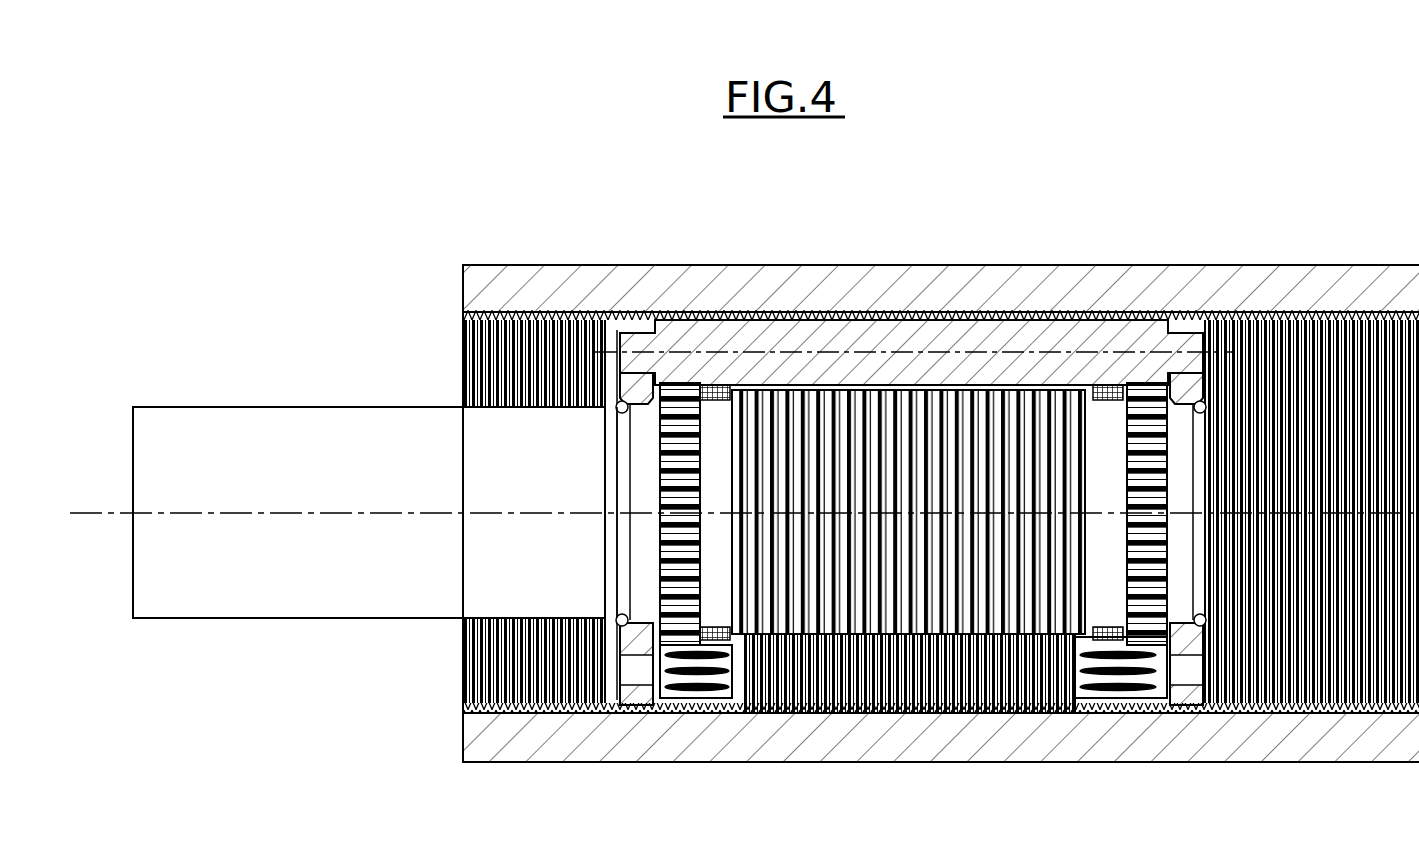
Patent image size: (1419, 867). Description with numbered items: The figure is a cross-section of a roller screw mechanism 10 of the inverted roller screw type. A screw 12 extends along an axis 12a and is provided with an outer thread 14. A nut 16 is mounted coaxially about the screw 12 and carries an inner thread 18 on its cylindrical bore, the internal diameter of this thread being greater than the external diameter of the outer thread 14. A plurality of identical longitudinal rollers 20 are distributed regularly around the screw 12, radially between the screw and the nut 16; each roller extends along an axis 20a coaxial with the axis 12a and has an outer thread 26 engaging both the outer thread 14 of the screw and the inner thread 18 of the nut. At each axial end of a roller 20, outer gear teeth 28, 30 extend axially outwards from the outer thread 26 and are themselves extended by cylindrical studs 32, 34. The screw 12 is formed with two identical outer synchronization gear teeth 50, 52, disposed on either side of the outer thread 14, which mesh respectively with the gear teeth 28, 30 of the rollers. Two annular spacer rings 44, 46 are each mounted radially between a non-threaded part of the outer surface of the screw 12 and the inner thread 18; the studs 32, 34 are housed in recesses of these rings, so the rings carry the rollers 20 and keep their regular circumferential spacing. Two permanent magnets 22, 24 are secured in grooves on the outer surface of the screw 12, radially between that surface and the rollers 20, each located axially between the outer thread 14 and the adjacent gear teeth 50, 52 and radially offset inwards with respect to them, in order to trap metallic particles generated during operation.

The roller screw mechanism 10 is at (1288, 226).
The screw 12 is at (231, 421).
The axis 12a is at (97, 512).
The outer thread 14 is at (840, 713).
The nut 16 is at (531, 264).
The inner thread 18 is at (688, 322).
The rollers 20 is at (787, 346).
The axis 20a is at (907, 355).
The magnet 22 is at (738, 385).
The magnet 24 is at (1096, 381).
The outer thread 26 is at (996, 700).
The outer gear teeth 28 is at (690, 675).
The outer gear teeth 30 is at (1130, 675).
The cylindrical stud 32 is at (634, 675).
The cylindrical stud 34 is at (1185, 675).
The spacer ring 44 is at (632, 390).
The spacer ring 46 is at (1192, 392).
The synchronization gear teeth 50 is at (675, 582).
The synchronization gear teeth 52 is at (1147, 585).